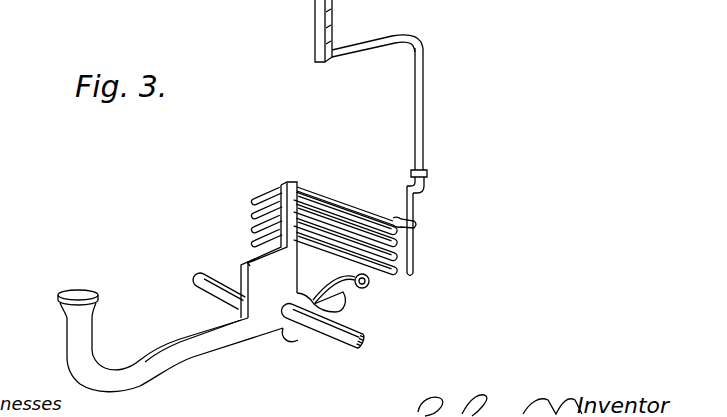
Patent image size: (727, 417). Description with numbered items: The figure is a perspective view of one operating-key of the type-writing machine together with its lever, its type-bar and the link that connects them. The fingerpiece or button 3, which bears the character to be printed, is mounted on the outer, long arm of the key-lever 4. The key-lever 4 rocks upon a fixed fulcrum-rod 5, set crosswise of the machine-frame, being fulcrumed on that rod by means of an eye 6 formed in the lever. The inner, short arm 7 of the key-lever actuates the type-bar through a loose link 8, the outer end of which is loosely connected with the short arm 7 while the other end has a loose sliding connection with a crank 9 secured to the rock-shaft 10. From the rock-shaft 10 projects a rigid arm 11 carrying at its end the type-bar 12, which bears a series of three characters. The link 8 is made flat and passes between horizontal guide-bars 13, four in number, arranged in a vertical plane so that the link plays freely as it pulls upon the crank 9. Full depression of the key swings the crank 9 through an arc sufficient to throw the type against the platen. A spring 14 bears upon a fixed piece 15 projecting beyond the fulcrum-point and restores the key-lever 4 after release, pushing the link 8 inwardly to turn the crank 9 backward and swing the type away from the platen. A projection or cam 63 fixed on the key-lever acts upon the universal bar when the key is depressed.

The fingerpiece or button 3 is at (75, 291).
The key-lever 4 is at (178, 340).
The fulcrum-rod 5 is at (202, 273).
The eye 6 is at (290, 337).
The projection or cam 63 is at (247, 262).
The short arm 7 is at (280, 237).
The link 8 is at (324, 198).
The crank 9 is at (406, 195).
The rock-shaft 10 is at (425, 105).
The rigid arm 11 is at (377, 36).
The type-bar 12 is at (318, 43).
The guide-bars 13 is at (254, 219).
The spring 14 is at (343, 278).
The fixed piece 15 is at (345, 310).